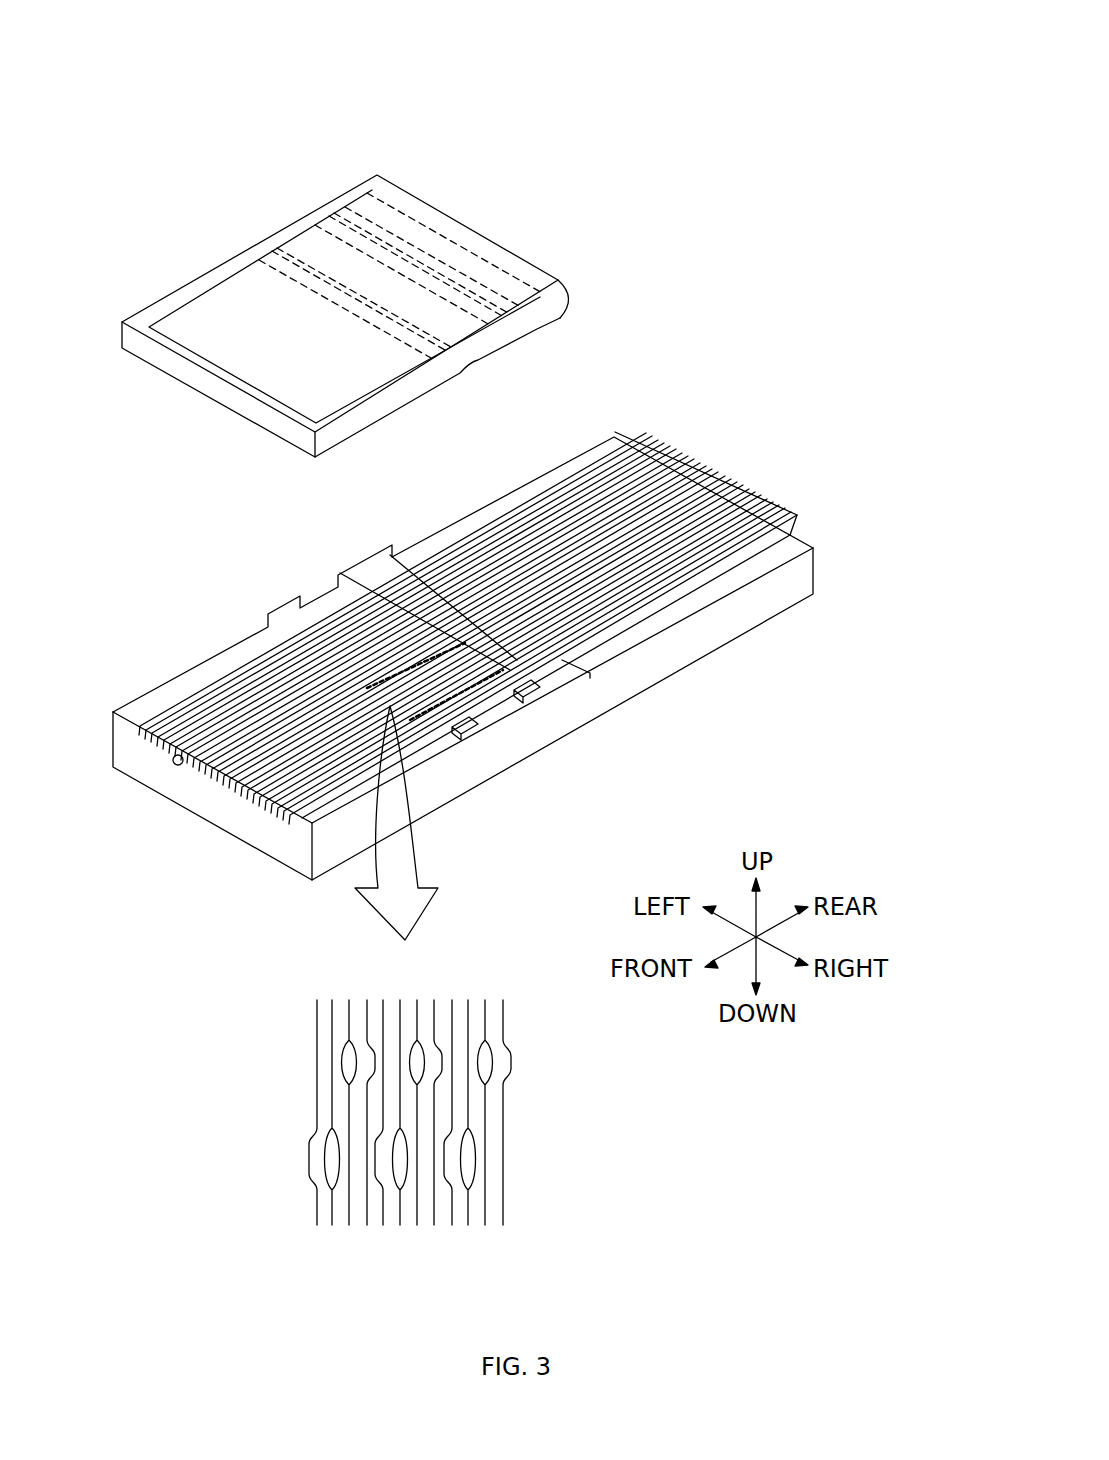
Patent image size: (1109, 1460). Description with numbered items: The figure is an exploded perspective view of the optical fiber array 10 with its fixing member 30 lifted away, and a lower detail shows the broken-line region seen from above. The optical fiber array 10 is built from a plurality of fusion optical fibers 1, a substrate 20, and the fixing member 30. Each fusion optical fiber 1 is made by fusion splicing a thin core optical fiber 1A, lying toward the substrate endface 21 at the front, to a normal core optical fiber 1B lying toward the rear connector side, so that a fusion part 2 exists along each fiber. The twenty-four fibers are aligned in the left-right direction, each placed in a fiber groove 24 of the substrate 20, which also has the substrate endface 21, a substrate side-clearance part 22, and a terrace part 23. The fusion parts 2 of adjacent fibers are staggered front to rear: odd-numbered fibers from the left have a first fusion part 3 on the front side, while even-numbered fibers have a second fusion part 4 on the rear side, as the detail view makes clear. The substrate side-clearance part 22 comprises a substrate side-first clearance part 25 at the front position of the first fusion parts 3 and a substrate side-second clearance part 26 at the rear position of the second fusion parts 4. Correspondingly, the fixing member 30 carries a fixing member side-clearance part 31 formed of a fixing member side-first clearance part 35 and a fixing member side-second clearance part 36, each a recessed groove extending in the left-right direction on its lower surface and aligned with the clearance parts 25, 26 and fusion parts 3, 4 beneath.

The optical fiber array 10 is at (739, 103).
The fixing member 30 is at (215, 282).
The fixing member side-clearance part 31 is at (552, 146).
The fixing member side-first clearance part 35 is at (470, 360).
The fixing member side-second clearance part 36 is at (523, 325).
The substrate 20 is at (405, 800).
The substrate endface 21 is at (291, 856).
The substrate side-clearance part 22 is at (652, 785).
The terrace part 23 is at (678, 610).
The fiber groove 24 is at (188, 745).
The substrate side-first clearance part 25 is at (480, 736).
The substrate side-second clearance part 26 is at (540, 700).
The fusion optical fiber 1 is at (468, 628).
The thin core optical fiber 1A is at (283, 820).
The normal core optical fiber 1B is at (797, 515).
The fusion part 2 is at (377, 466).
The first fusion part 3 is at (322, 636).
The second fusion part 4 is at (382, 588).